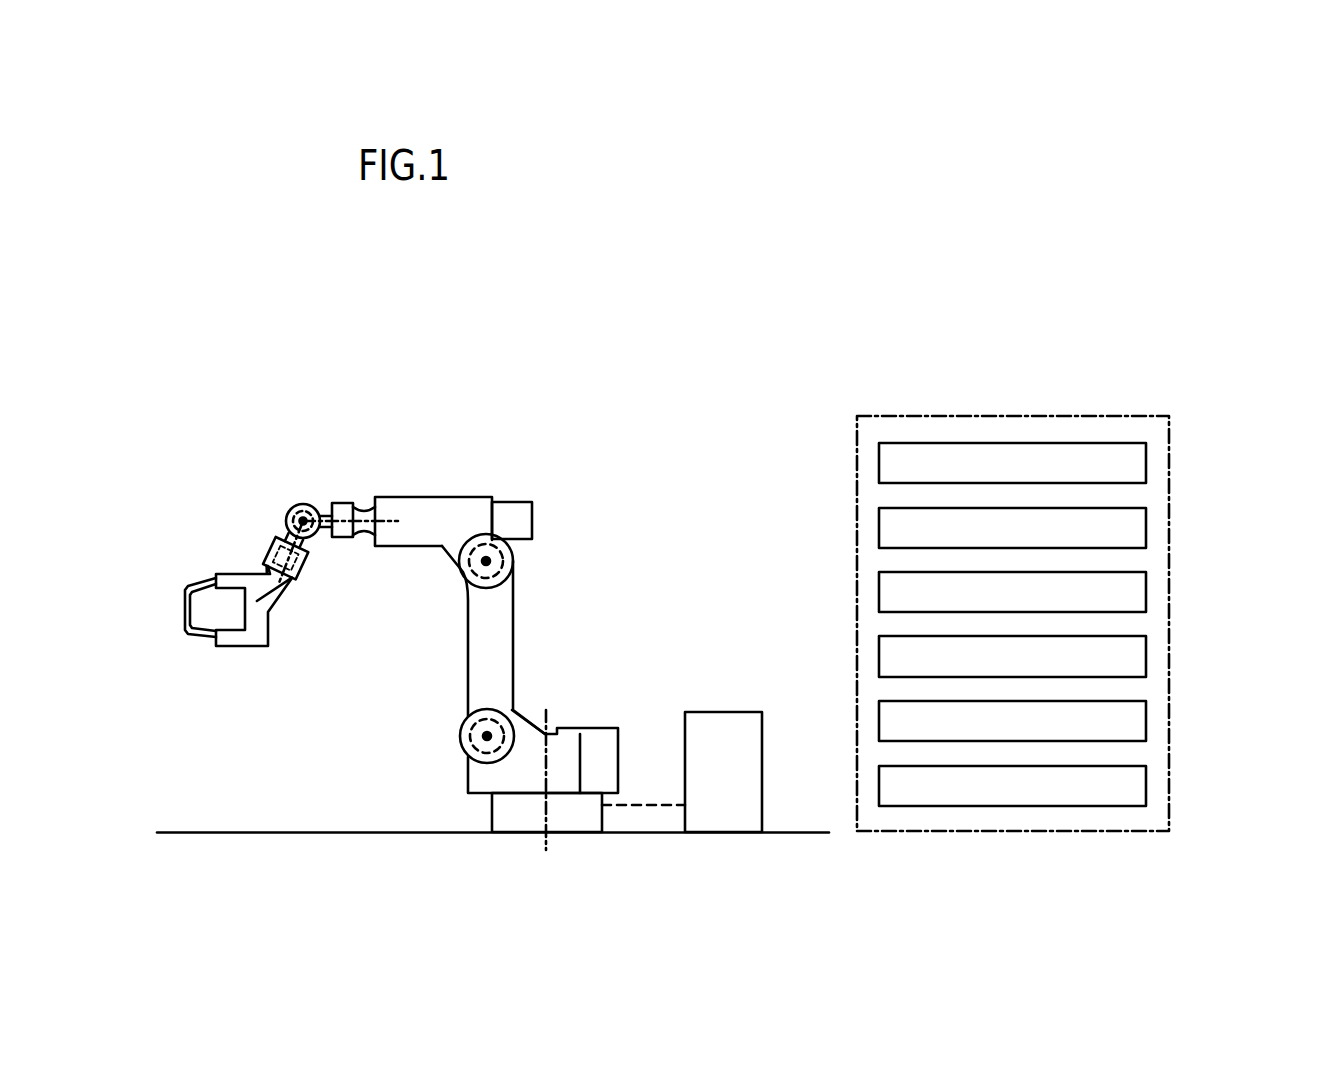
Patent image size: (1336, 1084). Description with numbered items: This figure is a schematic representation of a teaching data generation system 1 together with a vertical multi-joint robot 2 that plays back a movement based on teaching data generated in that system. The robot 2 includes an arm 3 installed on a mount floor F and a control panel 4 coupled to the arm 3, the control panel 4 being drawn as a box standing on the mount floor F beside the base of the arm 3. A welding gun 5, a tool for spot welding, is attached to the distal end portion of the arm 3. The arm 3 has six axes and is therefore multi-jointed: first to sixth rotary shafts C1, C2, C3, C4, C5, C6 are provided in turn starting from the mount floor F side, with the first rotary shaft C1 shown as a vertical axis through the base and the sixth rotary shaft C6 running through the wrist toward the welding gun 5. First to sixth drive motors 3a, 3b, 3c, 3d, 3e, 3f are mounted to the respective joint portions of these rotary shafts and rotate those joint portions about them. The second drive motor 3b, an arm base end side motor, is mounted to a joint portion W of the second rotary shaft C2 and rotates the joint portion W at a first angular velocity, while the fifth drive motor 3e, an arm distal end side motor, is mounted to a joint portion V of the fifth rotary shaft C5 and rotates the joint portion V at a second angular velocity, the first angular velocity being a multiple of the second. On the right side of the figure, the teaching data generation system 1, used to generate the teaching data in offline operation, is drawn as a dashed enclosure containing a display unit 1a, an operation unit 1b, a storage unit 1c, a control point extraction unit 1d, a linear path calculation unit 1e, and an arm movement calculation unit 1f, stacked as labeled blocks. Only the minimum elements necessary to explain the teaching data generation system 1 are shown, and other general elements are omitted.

The teaching data generation system 1 is at (1172, 415).
The display unit 1a is at (1146, 463).
The operation unit 1b is at (1146, 528).
The storage unit 1c is at (1146, 592).
The control point extraction unit 1d is at (1146, 657).
The linear path calculation unit 1e is at (1146, 721).
The arm movement calculation unit 1f is at (1146, 786).
The vertical multi-joint robot 2 is at (678, 427).
The arm 3 is at (480, 488).
The first drive motor 3a is at (618, 728).
The second drive motor 3b is at (462, 745).
The third drive motor 3c is at (457, 567).
The fourth drive motor 3d is at (535, 508).
The fifth drive motor 3e is at (292, 500).
The sixth drive motor 3f is at (282, 542).
The control panel 4 is at (718, 712).
The welding gun 5 is at (248, 573).
The first rotary shaft C1 is at (548, 710).
The second rotary shaft C2 is at (487, 736).
The third rotary shaft C3 is at (487, 561).
The fourth rotary shaft C4 is at (380, 522).
The fifth rotary shaft C5 is at (307, 516).
The sixth rotary shaft C6 is at (283, 580).
The joint portion V is at (306, 503).
The joint portion W is at (464, 753).
The mount floor F is at (233, 831).